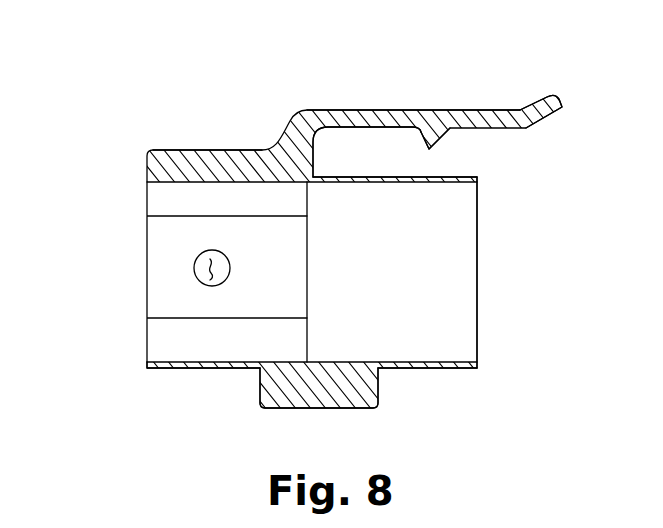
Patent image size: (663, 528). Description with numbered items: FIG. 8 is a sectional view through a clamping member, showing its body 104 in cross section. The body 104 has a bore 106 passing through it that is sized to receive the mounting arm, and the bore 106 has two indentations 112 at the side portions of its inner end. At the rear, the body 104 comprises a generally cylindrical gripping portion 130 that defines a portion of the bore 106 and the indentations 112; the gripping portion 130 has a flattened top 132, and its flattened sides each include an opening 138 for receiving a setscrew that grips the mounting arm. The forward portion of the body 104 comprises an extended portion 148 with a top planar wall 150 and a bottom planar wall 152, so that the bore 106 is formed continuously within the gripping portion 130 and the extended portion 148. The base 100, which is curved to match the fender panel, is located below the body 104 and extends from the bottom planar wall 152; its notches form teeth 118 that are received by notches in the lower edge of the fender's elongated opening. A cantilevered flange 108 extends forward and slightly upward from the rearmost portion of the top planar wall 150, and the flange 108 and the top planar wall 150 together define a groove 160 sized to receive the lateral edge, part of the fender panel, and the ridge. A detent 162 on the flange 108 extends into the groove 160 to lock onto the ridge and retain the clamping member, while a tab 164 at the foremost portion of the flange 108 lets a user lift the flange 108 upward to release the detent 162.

The base 100 is at (346, 243).
The body 104 is at (459, 369).
The bore 106 is at (375, 264).
The cantilevered flange 108 is at (371, 109).
The indentations 112 is at (212, 314).
The teeth 118 is at (272, 401).
The gripping portion 130 is at (148, 367).
The flattened top 132 is at (196, 150).
The opening 138 is at (196, 270).
The extended portion 148 is at (479, 300).
The top planar wall 150 is at (440, 177).
The bottom planar wall 152 is at (418, 368).
The groove 160 is at (372, 163).
The detent 162 is at (440, 138).
The tab 164 is at (540, 100).